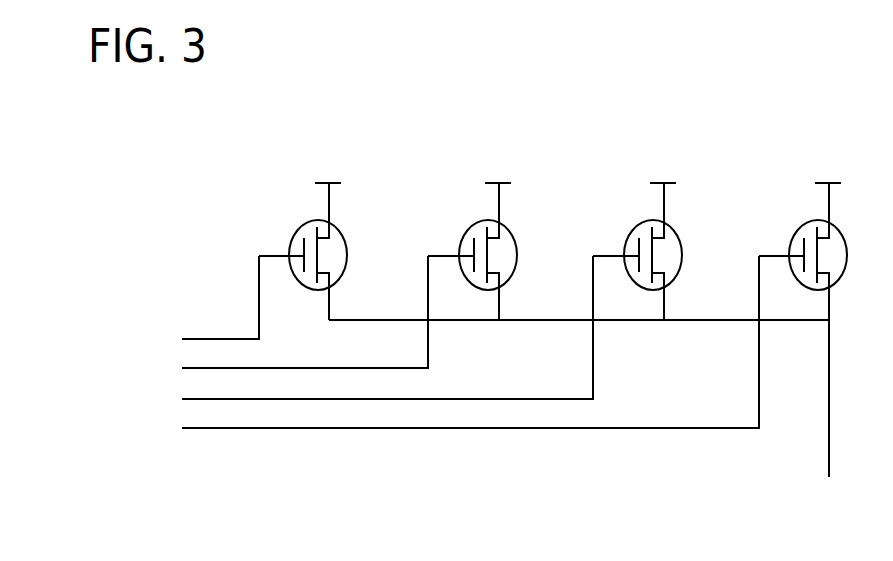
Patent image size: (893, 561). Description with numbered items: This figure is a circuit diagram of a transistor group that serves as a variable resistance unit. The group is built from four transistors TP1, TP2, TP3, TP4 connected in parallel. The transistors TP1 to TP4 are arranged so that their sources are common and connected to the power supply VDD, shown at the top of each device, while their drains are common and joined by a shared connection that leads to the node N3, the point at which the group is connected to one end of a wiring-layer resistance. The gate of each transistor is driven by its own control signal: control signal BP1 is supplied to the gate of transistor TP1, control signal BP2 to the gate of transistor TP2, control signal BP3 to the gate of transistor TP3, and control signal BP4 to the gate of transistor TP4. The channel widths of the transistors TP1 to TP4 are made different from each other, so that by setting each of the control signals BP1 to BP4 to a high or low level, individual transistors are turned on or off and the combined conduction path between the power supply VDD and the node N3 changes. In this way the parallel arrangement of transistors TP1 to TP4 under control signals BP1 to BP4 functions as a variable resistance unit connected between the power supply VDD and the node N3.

The transistor TP1 is at (295, 251).
The transistor TP2 is at (465, 251).
The transistor TP3 is at (631, 251).
The transistor TP4 is at (795, 251).
The control signal BP1 is at (141, 305).
The control signal BP2 is at (225, 320).
The control signal BP3 is at (308, 335).
The control signal BP4 is at (391, 350).
The node N3 is at (823, 491).
The power supply VDD is at (574, 168).